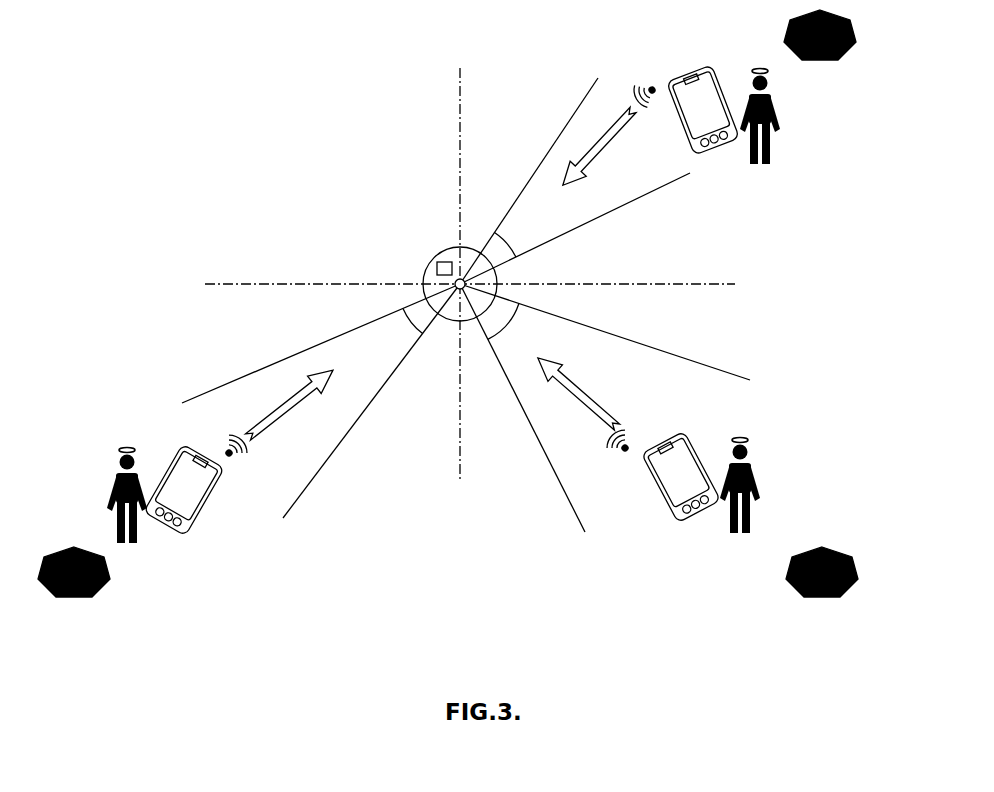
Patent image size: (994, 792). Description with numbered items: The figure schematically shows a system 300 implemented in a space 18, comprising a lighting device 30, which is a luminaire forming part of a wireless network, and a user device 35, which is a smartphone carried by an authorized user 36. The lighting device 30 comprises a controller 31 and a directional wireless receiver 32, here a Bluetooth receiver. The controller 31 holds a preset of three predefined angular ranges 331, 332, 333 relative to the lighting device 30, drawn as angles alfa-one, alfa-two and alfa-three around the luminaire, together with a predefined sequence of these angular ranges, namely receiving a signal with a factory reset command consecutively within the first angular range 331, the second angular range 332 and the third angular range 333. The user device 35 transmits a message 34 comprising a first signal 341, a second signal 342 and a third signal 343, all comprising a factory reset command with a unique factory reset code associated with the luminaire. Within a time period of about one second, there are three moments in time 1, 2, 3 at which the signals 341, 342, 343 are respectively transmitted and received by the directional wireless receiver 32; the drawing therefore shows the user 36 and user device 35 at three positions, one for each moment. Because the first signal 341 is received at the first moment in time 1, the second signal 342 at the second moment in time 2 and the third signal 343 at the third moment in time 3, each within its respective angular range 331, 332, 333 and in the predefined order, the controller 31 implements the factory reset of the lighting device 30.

The system 300 is at (274, 158).
The space 18 is at (382, 126).
The lighting device 30 is at (436, 247).
The controller 31 is at (457, 256).
The directional wireless receiver 32 is at (450, 280).
The first angular range 331 is at (403, 321).
The second angular range 332 is at (514, 243).
The third angular range 333 is at (518, 318).
The message 34 is at (466, 273).
The first signal 341 is at (298, 407).
The second signal 342 is at (590, 151).
The third signal 343 is at (582, 388).
The user device 35 is at (204, 500).
The authorized user 36 is at (135, 466).
The first moment in time 1 is at (111, 579).
The second moment in time 2 is at (856, 42).
The third moment in time 3 is at (858, 579).